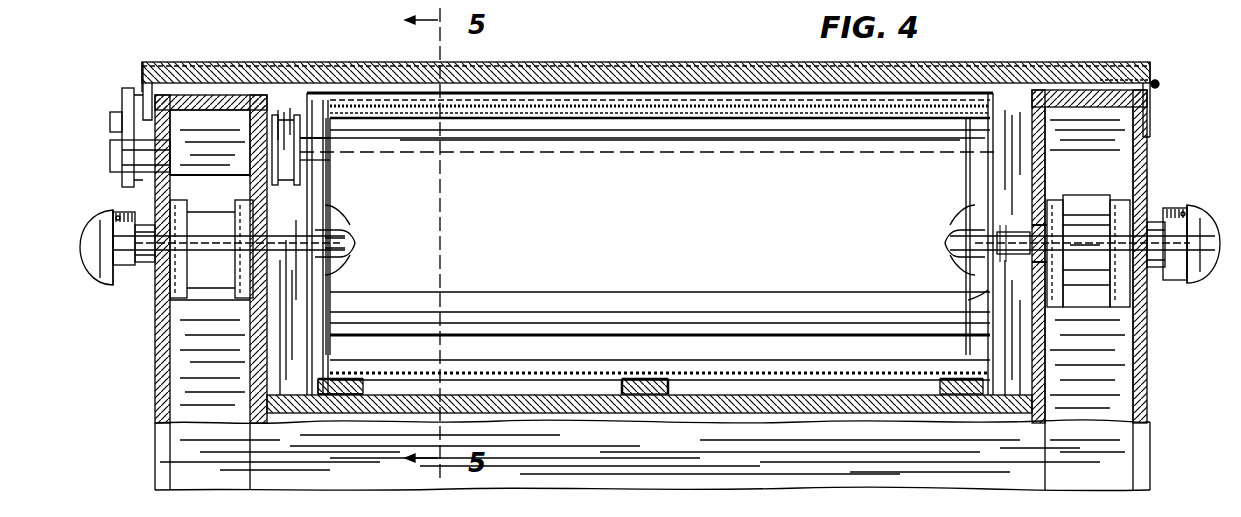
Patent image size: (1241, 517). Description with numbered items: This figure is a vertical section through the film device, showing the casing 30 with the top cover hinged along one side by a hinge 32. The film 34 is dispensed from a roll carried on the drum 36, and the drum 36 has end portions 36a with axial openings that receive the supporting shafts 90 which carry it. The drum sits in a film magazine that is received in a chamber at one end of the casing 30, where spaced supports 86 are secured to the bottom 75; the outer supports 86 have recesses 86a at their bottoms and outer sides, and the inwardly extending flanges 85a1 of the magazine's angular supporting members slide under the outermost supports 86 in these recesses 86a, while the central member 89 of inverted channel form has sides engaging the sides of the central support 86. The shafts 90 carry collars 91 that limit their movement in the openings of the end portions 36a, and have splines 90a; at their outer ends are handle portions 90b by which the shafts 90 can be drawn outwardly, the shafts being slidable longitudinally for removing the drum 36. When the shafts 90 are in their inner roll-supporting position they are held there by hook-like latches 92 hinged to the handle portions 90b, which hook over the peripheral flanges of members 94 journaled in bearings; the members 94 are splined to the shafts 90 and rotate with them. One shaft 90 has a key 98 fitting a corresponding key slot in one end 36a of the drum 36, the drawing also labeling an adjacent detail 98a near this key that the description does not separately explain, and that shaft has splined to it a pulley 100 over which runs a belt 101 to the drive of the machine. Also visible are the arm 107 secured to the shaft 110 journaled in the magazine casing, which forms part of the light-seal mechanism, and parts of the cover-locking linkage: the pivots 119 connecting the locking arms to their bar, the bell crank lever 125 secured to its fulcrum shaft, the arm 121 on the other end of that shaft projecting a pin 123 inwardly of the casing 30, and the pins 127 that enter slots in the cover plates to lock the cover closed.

The casing 30 is at (1147, 365).
The hinge 32 is at (1160, 85).
The film 34 is at (598, 98).
The drum 36 is at (698, 320).
The end portions 36a is at (335, 205).
The bottom 75 is at (768, 400).
The inwardly extending flanges 85a1 is at (326, 395).
The supports 86 is at (364, 388).
The recesses 86a is at (336, 378).
The member 89 is at (668, 387).
The supporting shafts 90 is at (355, 232).
The splines 90a is at (205, 265).
The handle portions 90b is at (92, 268).
The collars 91 is at (340, 278).
The hook-like latches 92 is at (128, 210).
The members 94 is at (146, 262).
The key 98 is at (1000, 232).
The coupling lip 98a is at (970, 298).
The pulley 100 is at (1100, 282).
The belt 101 is at (1147, 315).
The arm 107 is at (300, 138).
The shaft 110 is at (328, 160).
The pivots 119 is at (186, 176).
The arm 121 is at (262, 140).
The pin 123 is at (286, 157).
The bell crank lever 125 is at (112, 142).
The pins 127 is at (143, 88).